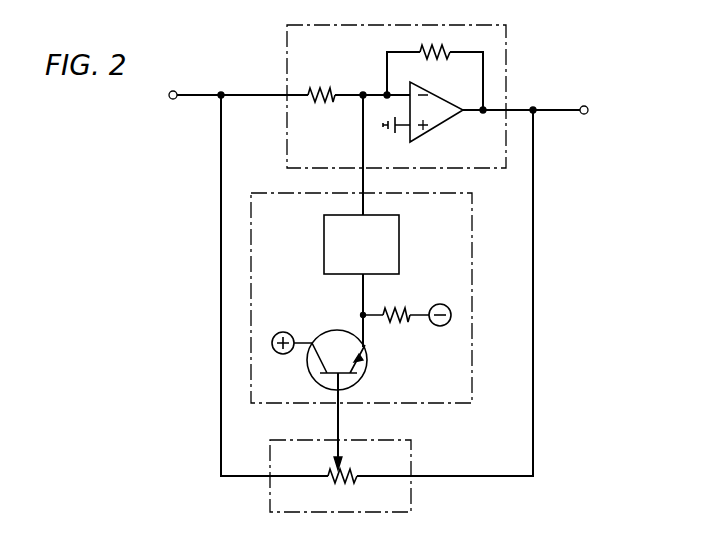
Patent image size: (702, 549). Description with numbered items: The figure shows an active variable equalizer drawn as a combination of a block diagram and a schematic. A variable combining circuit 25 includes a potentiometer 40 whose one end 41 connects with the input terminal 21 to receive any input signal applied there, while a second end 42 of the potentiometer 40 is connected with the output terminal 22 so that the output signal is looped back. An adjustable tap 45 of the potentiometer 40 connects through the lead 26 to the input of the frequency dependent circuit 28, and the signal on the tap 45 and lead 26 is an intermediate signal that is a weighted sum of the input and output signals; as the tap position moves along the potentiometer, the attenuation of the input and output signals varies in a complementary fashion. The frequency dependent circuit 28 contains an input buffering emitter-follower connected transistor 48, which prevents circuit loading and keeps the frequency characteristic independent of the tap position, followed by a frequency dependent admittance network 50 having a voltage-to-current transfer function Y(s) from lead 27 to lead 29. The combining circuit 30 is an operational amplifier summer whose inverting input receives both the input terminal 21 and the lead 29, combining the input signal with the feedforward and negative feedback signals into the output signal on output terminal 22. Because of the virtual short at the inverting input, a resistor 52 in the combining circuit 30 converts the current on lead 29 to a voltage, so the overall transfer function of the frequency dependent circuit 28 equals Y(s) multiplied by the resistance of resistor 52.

The input terminal 21 is at (174, 99).
The output terminal 22 is at (584, 114).
The combining circuit 30 is at (506, 77).
The resistor 52 is at (441, 49).
The lead 29 is at (365, 186).
The frequency dependent circuit 28 is at (472, 262).
The frequency dependent admittance network 50 is at (324, 242).
The lead 27 is at (363, 293).
The transistor 48 is at (369, 366).
The lead 26 is at (341, 425).
The variable combining circuit 25 is at (411, 500).
The adjustable tap 45 is at (348, 468).
The potentiometer 40 is at (340, 483).
The one end 41 is at (328, 478).
The second end 42 is at (357, 478).